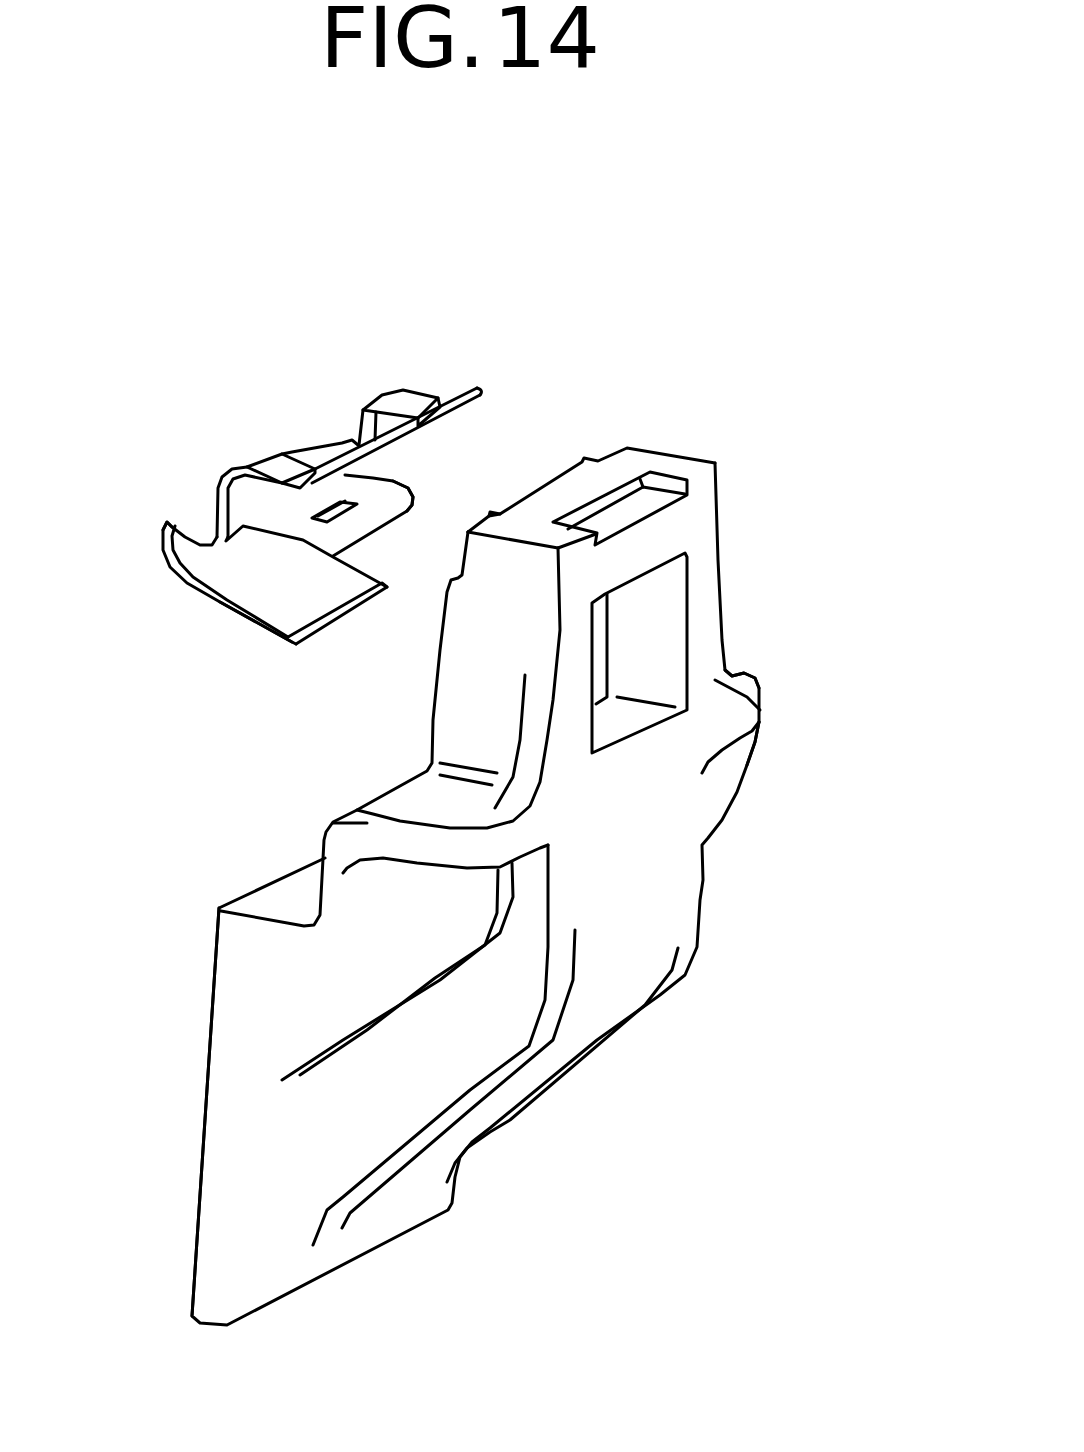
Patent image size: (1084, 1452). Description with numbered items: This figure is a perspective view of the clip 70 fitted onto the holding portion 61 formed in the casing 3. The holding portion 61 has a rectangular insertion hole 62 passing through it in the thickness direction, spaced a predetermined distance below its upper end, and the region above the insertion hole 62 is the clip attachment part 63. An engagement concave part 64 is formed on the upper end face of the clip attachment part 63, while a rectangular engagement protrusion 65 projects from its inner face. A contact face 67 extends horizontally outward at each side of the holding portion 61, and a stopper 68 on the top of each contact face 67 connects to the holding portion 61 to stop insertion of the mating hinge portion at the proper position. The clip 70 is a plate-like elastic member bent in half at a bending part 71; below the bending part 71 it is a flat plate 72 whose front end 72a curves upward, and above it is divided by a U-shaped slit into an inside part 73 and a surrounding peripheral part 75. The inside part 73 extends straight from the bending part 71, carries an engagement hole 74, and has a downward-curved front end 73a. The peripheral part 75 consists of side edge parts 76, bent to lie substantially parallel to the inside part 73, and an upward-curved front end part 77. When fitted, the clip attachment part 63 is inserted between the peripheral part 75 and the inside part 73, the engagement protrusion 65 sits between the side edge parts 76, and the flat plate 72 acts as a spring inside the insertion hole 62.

The casing 3 is at (203, 1103).
The holding portion 61 is at (728, 503).
The insertion hole 62 is at (673, 615).
The clip attachment part 63 is at (668, 452).
The engagement concave part 64 is at (625, 510).
The engagement protrusion 65 is at (532, 472).
The contact face 67 is at (760, 677).
The stopper 68 is at (715, 680).
The clip 70 is at (270, 390).
The bending part 71 is at (163, 532).
The flat plate 72 is at (243, 583).
The front end of the flat plate 72a is at (317, 628).
The inside part 73 is at (377, 482).
The front end of the inside part 73a is at (413, 498).
The engagement hole 74 is at (328, 524).
The peripheral part 75 is at (400, 392).
The side edge parts 76 is at (262, 475).
The front end part 77 is at (355, 430).